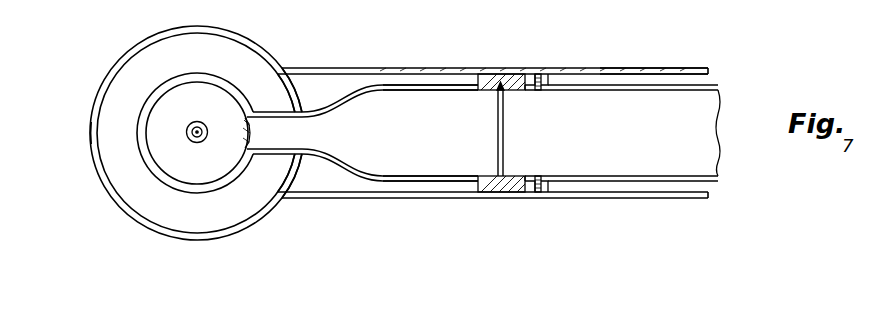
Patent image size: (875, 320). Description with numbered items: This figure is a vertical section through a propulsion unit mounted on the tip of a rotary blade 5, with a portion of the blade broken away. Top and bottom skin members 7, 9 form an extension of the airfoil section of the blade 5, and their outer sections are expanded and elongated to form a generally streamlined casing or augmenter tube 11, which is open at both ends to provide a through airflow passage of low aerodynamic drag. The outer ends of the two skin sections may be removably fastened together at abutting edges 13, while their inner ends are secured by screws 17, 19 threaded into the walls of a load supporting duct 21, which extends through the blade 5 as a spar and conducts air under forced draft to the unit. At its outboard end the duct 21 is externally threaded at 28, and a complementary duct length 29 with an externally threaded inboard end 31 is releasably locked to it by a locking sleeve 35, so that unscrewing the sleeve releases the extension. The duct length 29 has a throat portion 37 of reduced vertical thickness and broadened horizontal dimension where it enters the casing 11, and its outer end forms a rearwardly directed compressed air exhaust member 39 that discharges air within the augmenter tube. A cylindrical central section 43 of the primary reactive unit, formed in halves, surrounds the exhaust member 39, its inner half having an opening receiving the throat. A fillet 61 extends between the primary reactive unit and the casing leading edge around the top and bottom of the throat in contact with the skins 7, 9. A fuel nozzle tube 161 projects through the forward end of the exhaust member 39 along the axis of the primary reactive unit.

The blade 5 is at (709, 70).
The top skin member 7 is at (420, 68).
The bottom skin member 9 is at (427, 198).
The casing 11 is at (221, 33).
The abutting edges 13 is at (90, 135).
The screw 17 is at (539, 76).
The screw 19 is at (538, 194).
The duct 21 is at (719, 178).
The externally threaded end 28 is at (520, 92).
The duct length 29 is at (440, 85).
The externally threaded inboard end 31 is at (490, 92).
The locking sleeve 35 is at (487, 76).
The throat portion 37 is at (312, 112).
The compressed air exhaust member 39 is at (246, 108).
The cylindrical central section 43 is at (215, 74).
The fillet 61 is at (280, 112).
The fuel nozzle tube 161 is at (196, 143).